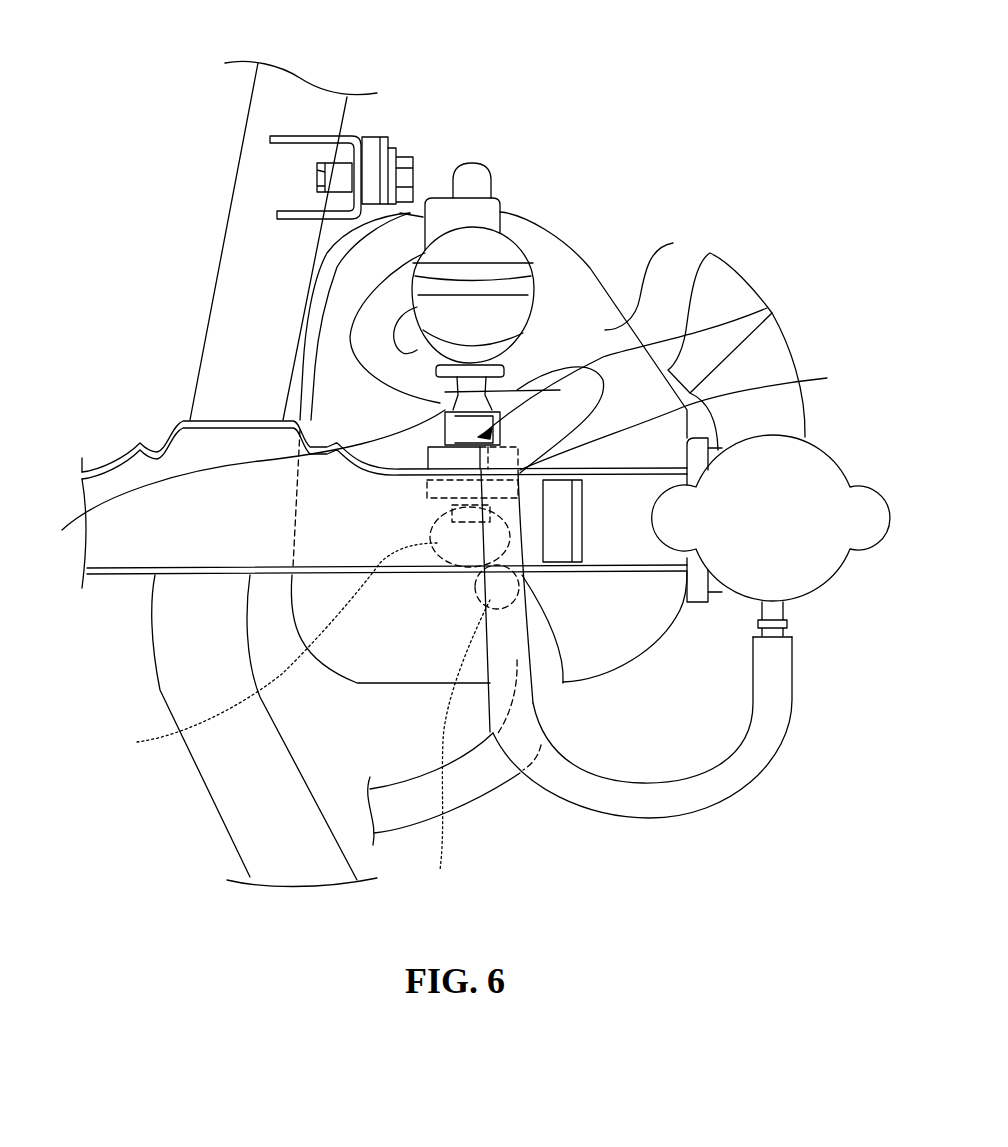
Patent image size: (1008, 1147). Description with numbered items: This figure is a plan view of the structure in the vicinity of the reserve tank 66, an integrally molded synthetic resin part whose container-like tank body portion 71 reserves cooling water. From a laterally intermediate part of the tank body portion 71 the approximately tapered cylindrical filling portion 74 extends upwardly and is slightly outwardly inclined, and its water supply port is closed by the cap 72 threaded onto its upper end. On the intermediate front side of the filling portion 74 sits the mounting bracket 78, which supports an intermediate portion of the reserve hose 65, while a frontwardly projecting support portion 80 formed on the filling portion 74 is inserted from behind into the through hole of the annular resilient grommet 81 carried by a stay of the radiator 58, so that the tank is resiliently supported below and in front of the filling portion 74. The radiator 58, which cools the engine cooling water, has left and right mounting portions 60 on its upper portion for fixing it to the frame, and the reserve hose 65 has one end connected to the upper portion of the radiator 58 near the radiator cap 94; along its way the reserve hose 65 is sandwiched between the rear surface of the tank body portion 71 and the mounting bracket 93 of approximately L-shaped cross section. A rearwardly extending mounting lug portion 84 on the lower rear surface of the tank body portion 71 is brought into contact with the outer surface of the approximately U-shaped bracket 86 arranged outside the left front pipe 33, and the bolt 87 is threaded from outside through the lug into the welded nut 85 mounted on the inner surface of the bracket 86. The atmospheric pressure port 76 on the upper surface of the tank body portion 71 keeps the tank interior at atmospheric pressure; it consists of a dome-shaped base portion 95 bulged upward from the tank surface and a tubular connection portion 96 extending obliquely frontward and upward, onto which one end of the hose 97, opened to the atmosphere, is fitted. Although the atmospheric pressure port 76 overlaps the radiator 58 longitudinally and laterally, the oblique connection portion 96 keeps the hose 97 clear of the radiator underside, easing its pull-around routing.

The front pipe 33 is at (247, 277).
The radiator 58 is at (196, 578).
The mounting portion 60 is at (577, 522).
The reserve hose 65 is at (649, 805).
The reserve tank 66 is at (607, 272).
The tank body portion 71 is at (657, 278).
The cap 72 is at (500, 252).
The filling portion 74 is at (443, 413).
The atmospheric pressure port 76 is at (462, 577).
The mounting bracket 78 is at (364, 499).
The support portion 80 is at (767, 308).
The grommet 81 is at (690, 418).
The mounting lug portion 84 is at (375, 145).
The welded nut 85 is at (347, 157).
The bracket 86 is at (303, 133).
The bolt 87 is at (401, 162).
The mounting bracket 93 is at (487, 212).
The radiator cap 94 is at (827, 477).
The base portion 95 is at (268, 653).
The connection portion 96 is at (457, 752).
The hose 97 is at (472, 795).